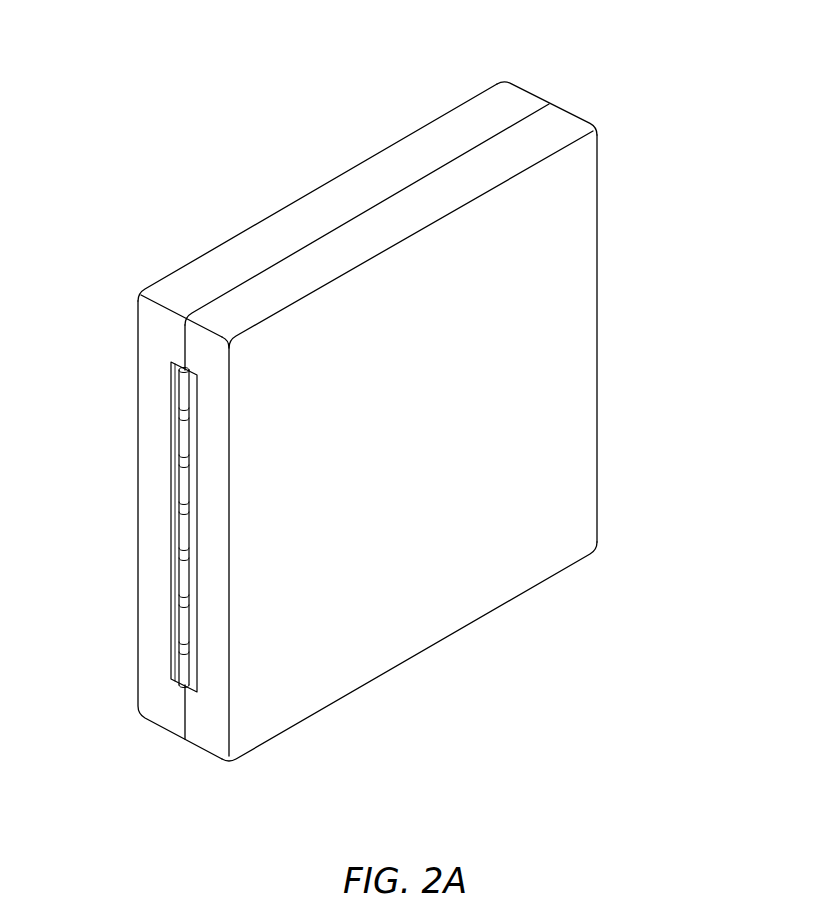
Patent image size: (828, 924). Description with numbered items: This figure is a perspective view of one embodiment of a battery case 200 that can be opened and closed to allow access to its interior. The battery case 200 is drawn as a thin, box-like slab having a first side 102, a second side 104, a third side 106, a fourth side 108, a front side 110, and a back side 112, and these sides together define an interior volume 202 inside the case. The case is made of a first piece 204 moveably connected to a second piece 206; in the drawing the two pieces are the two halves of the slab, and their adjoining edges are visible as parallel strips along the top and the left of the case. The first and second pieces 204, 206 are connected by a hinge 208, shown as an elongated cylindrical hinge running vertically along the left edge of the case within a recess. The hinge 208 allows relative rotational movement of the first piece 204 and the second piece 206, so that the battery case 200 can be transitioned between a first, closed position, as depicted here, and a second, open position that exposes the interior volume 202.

The battery case 200 is at (186, 106).
The first side 102 is at (150, 367).
The second side 104 is at (335, 195).
The third side 106 is at (597, 235).
The fourth side 108 is at (433, 650).
The front side 110 is at (575, 343).
The back side 112 is at (207, 248).
The interior volume 202 is at (306, 622).
The first piece 204 is at (564, 128).
The second piece 206 is at (514, 95).
The hinge 208 is at (182, 525).